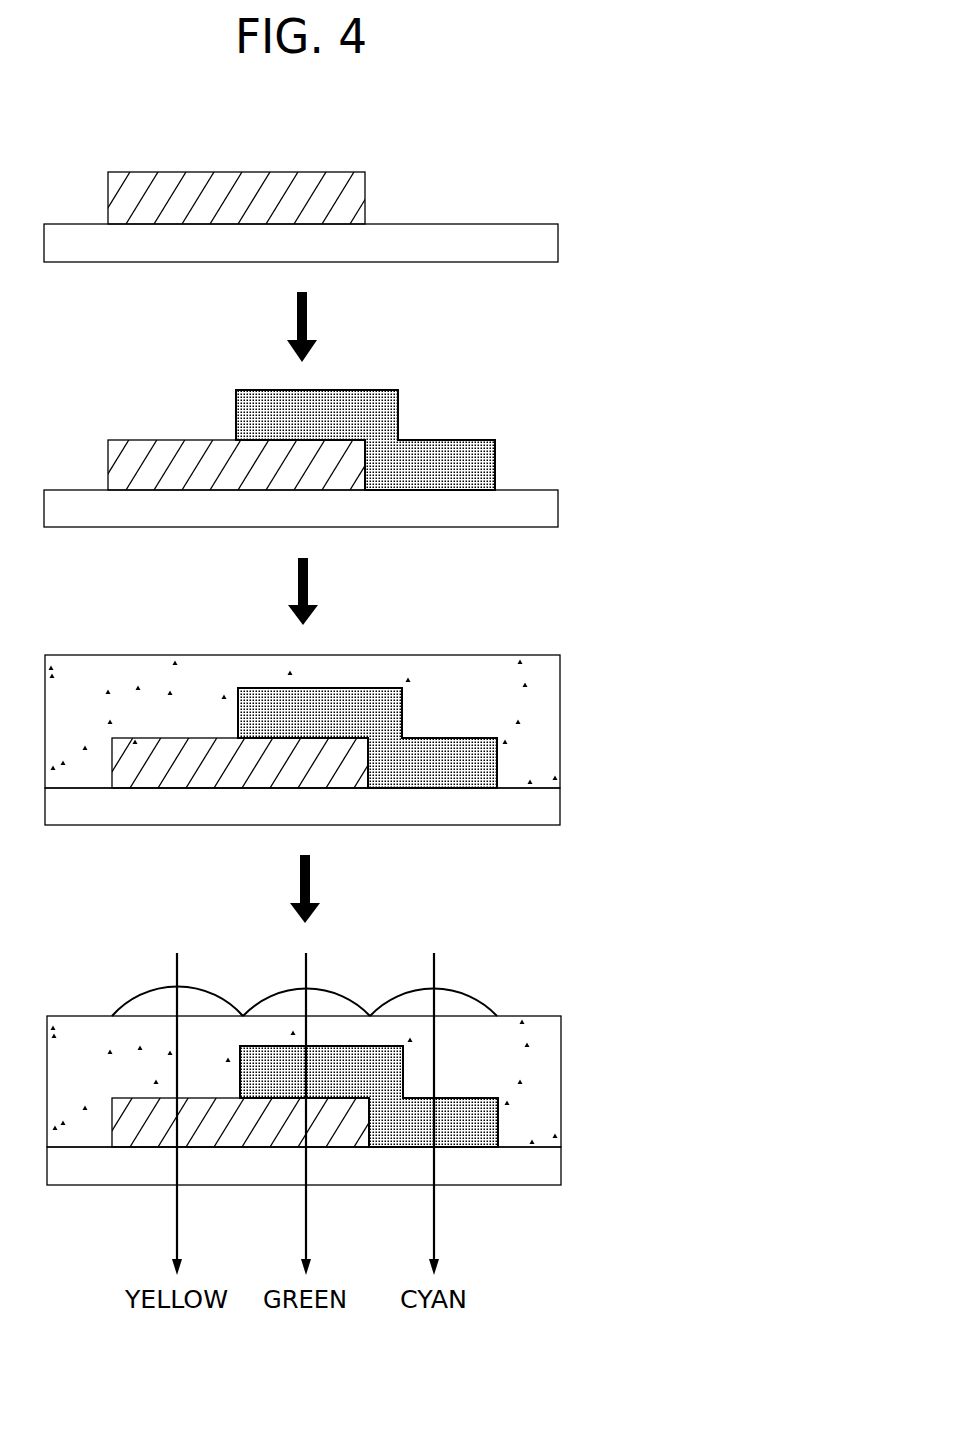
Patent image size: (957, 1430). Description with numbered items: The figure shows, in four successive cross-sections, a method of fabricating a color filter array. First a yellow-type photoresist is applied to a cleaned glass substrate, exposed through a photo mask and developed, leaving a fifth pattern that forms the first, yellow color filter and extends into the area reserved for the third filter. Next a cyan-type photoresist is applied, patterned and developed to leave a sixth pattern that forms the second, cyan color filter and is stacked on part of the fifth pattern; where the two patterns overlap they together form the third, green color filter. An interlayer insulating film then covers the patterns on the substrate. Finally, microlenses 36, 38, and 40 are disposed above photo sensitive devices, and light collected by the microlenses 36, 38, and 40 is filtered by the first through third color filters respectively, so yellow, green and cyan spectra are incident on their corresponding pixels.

The microlens 36 is at (203, 988).
The microlens 38 is at (332, 988).
The microlens 40 is at (461, 988).